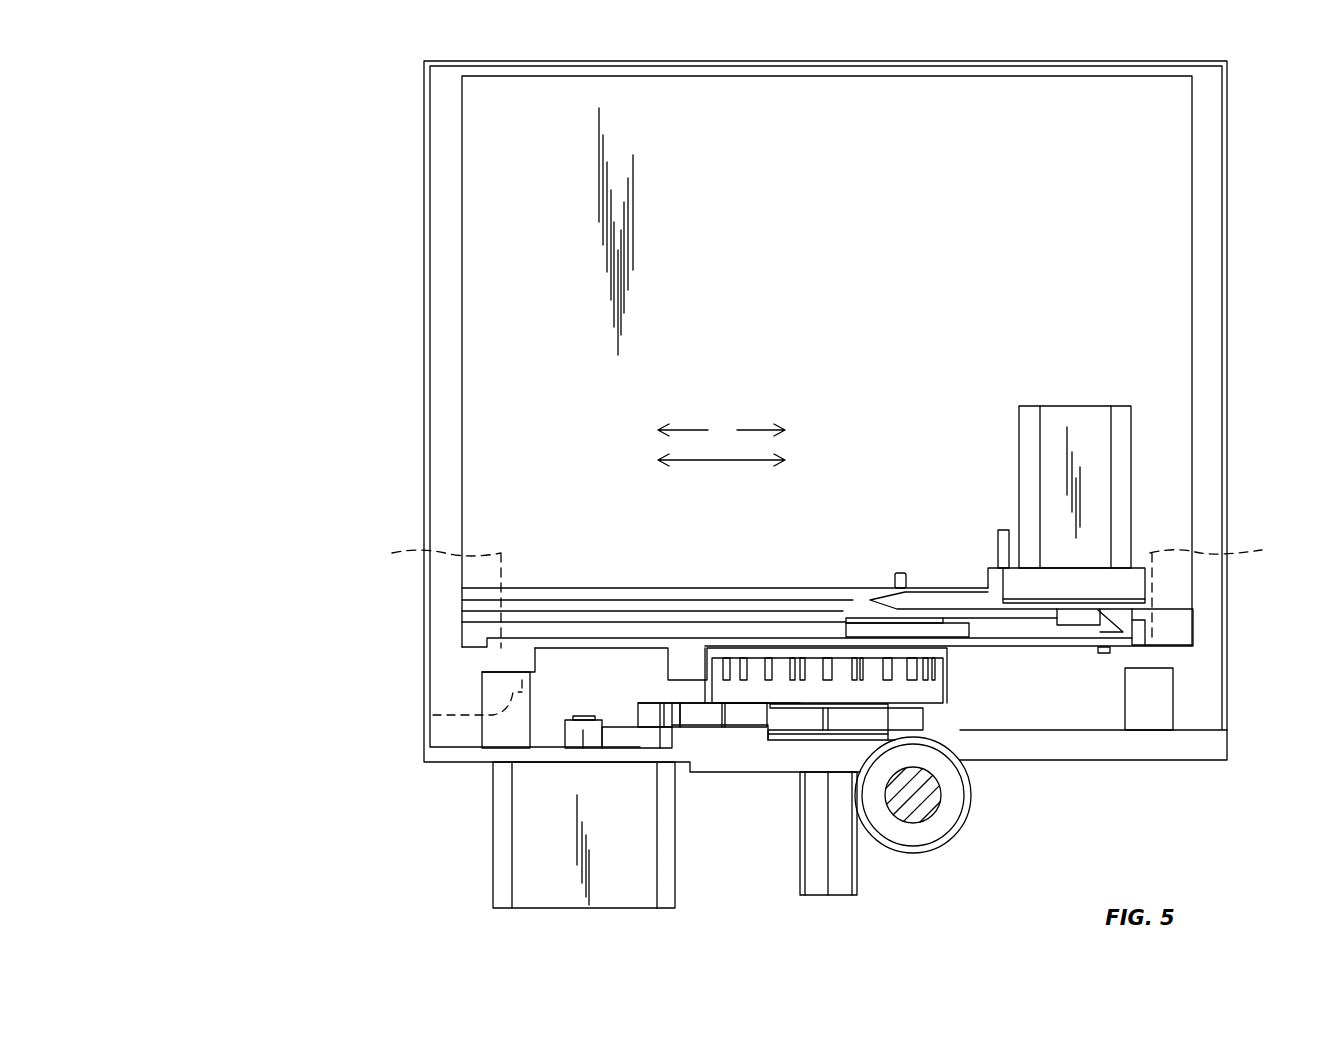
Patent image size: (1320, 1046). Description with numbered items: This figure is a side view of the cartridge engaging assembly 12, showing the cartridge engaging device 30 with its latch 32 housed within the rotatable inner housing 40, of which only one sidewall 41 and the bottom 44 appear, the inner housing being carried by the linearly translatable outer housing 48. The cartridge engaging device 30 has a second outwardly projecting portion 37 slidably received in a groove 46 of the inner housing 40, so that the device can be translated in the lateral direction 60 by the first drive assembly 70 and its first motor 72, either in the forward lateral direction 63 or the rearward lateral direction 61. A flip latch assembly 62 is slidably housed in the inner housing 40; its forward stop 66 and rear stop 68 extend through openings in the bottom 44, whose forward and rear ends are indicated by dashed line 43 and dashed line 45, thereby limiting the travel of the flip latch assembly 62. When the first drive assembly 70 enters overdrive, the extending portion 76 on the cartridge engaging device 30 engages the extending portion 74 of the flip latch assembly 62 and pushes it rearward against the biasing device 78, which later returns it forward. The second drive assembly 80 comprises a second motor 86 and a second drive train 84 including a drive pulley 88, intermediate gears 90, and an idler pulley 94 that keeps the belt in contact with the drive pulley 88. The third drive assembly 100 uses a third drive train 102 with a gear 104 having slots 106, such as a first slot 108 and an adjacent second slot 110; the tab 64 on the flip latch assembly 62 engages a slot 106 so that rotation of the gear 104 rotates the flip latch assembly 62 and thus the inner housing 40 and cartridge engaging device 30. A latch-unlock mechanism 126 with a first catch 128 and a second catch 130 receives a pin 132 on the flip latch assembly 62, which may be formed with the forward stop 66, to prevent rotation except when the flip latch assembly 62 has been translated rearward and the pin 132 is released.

The cartridge engaging assembly 12 is at (288, 168).
The cartridge engaging device 30 is at (980, 447).
The latch 32 is at (898, 572).
The second outwardly projecting portion 37 is at (1078, 600).
The inner housing 40 is at (765, 361).
The sidewall 41 is at (462, 332).
The dashed line 43 is at (430, 594).
The bottom 44 is at (558, 665).
The dashed line 45 is at (1221, 589).
The groove 46 is at (815, 605).
The outer housing 48 is at (424, 238).
The lateral direction 60 is at (722, 460).
The rearward lateral direction 61 is at (757, 430).
The flip latch assembly 62 is at (586, 632).
The forward lateral direction 63 is at (690, 430).
The tab 64 is at (668, 662).
The forward stop 66 is at (502, 660).
The rear stop 68 is at (1105, 655).
The first drive assembly 70 is at (1074, 378).
The first motor 72 is at (1131, 487).
The extending portion 74 is at (1137, 642).
The extending portion 76 is at (1123, 617).
The biasing device 78 is at (856, 600).
The second drive assembly 80 is at (866, 722).
The second drive train 84 is at (957, 716).
The second motor 86 is at (493, 873).
The drive pulley 88 is at (798, 718).
The intermediate gears 90 is at (610, 706).
The idler pulley 94 is at (903, 735).
The third drive assembly 100 is at (902, 680).
The third drive train 102 is at (972, 682).
The gear 104 is at (757, 657).
The slots 106 is at (700, 663).
The first slot 108 is at (750, 684).
The second slot 110 is at (757, 692).
The latch-unlock mechanism 126 is at (458, 679).
The first catch 128 is at (482, 737).
The second catch 130 is at (1173, 703).
The pin 132 is at (433, 715).